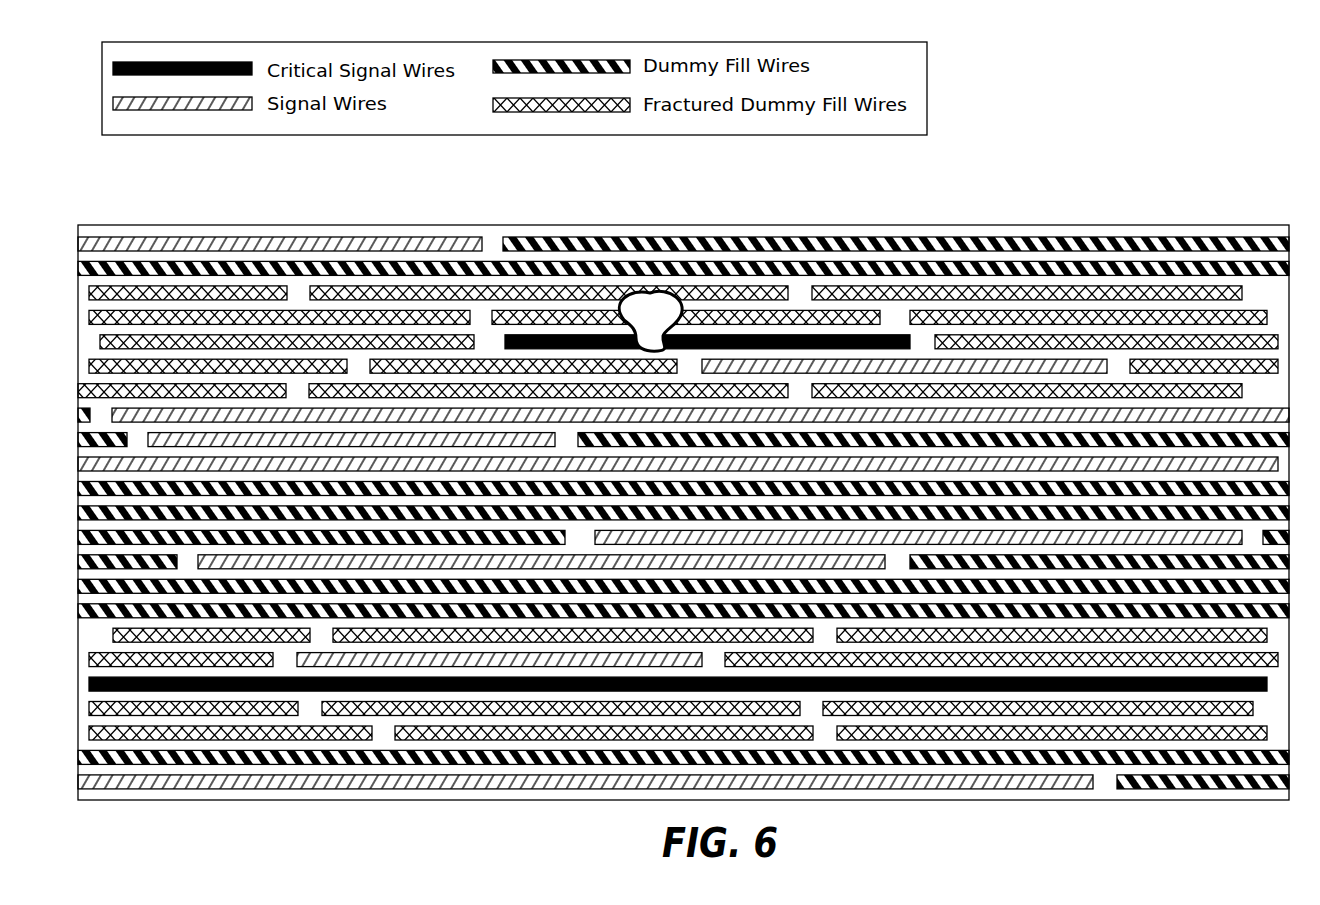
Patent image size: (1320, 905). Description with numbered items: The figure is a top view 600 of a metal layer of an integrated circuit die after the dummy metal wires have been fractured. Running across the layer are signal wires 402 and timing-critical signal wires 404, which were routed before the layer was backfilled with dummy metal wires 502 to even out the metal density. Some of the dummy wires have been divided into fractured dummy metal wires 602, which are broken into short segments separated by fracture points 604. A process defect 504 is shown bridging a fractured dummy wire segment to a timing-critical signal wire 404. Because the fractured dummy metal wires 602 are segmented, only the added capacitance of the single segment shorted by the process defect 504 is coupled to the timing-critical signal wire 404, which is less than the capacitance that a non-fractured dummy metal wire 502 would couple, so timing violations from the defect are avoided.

The top view 600 is at (1181, 187).
The signal wires 402 is at (372, 236).
The dummy metal wires 502 is at (585, 261).
The fractured dummy metal wires 602 is at (596, 309).
The fracture points 604 is at (296, 285).
The timing-critical signal wires 404 is at (773, 334).
The process defect 504 is at (656, 303).